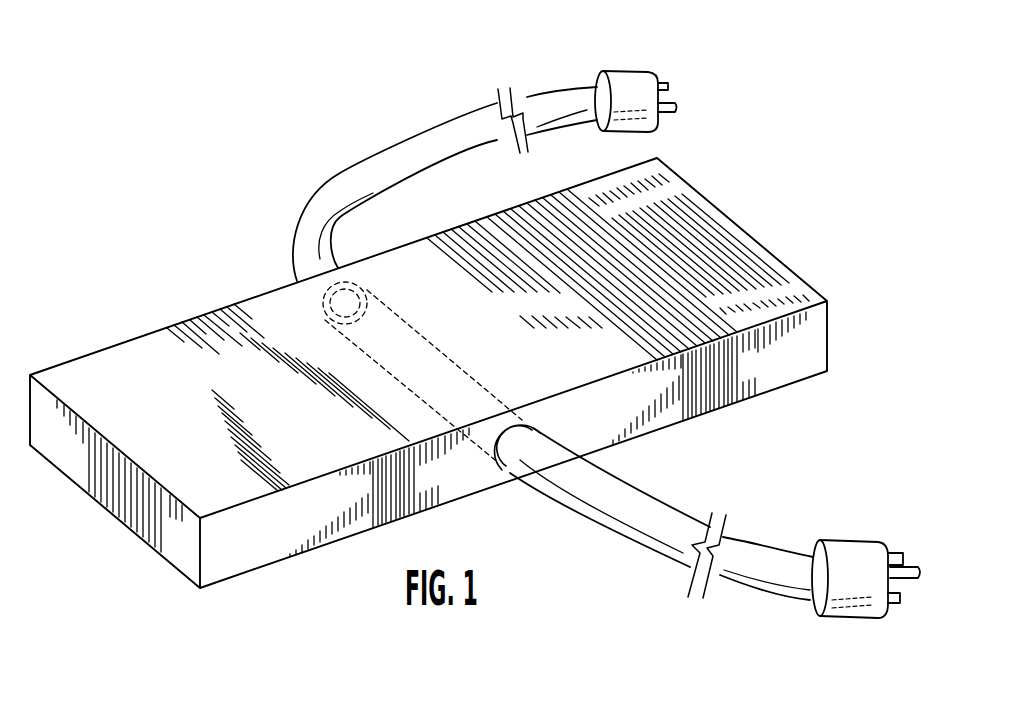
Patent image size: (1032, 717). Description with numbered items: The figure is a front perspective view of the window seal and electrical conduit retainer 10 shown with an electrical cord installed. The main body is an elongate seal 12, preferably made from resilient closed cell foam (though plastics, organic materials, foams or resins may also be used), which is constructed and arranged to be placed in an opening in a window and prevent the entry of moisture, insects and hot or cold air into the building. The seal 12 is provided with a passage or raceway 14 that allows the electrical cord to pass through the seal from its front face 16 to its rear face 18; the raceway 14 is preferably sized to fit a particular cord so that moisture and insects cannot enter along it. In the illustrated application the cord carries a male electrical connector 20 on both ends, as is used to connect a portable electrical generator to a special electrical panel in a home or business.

The window seal and electrical conduit retainer 10 is at (135, 287).
The seal 12 is at (797, 274).
The passage or raceway 14 is at (343, 338).
The front face 16 is at (653, 514).
The rear face 18 is at (183, 321).
The male electrical connector 20 is at (627, 80).